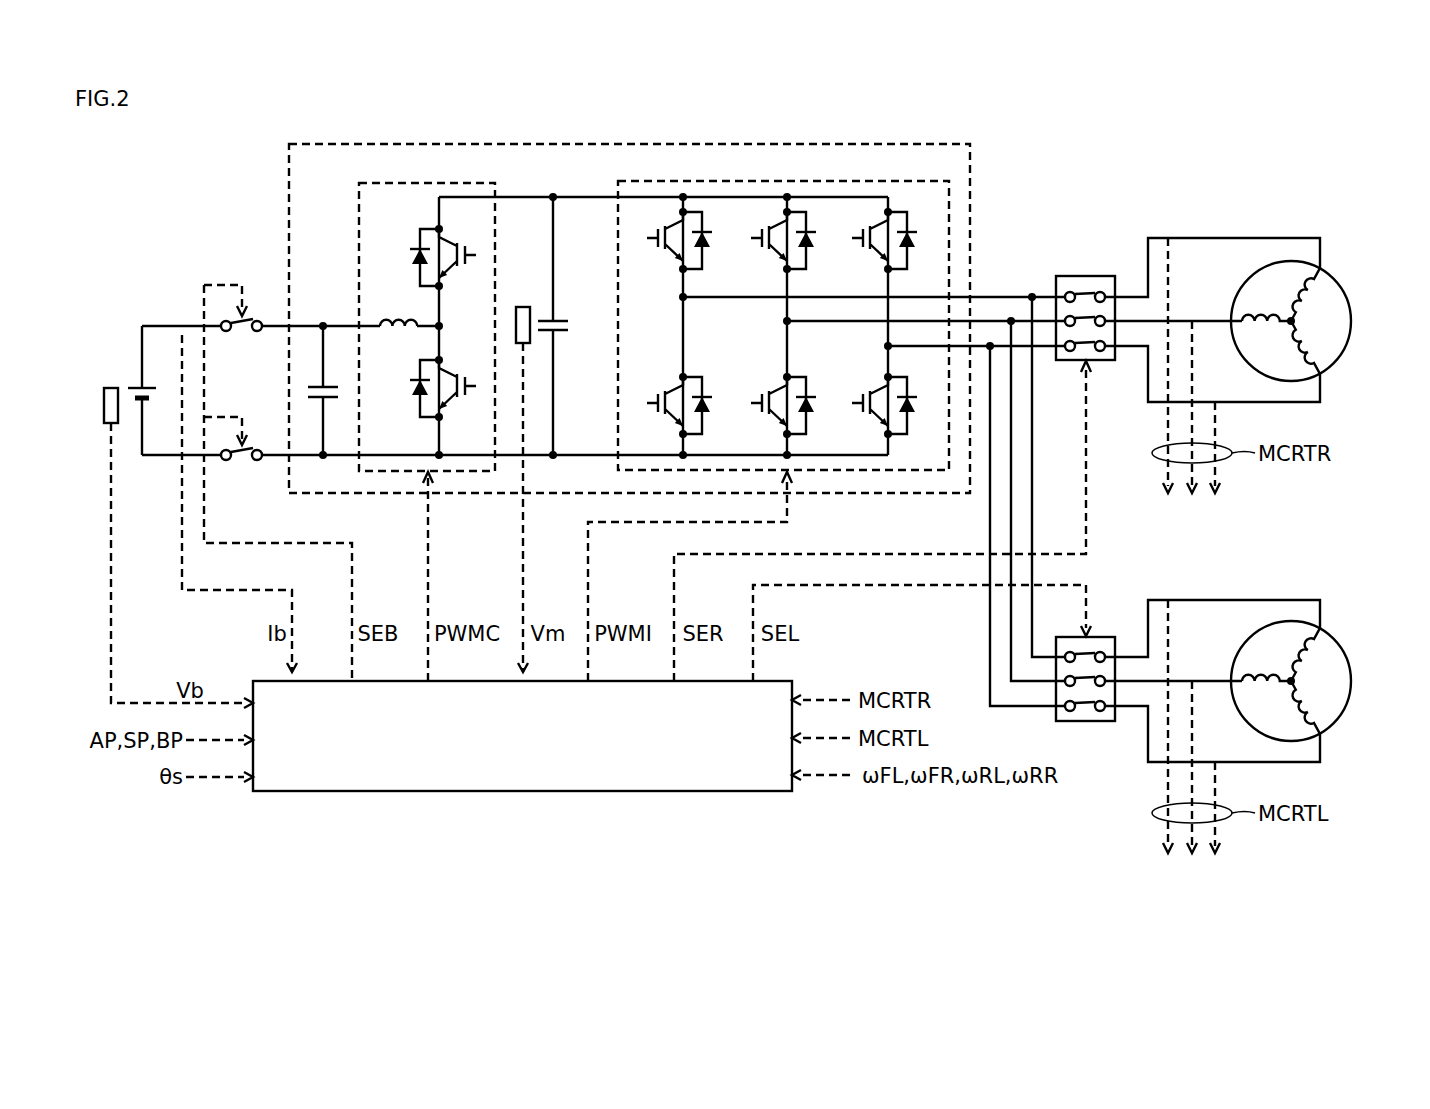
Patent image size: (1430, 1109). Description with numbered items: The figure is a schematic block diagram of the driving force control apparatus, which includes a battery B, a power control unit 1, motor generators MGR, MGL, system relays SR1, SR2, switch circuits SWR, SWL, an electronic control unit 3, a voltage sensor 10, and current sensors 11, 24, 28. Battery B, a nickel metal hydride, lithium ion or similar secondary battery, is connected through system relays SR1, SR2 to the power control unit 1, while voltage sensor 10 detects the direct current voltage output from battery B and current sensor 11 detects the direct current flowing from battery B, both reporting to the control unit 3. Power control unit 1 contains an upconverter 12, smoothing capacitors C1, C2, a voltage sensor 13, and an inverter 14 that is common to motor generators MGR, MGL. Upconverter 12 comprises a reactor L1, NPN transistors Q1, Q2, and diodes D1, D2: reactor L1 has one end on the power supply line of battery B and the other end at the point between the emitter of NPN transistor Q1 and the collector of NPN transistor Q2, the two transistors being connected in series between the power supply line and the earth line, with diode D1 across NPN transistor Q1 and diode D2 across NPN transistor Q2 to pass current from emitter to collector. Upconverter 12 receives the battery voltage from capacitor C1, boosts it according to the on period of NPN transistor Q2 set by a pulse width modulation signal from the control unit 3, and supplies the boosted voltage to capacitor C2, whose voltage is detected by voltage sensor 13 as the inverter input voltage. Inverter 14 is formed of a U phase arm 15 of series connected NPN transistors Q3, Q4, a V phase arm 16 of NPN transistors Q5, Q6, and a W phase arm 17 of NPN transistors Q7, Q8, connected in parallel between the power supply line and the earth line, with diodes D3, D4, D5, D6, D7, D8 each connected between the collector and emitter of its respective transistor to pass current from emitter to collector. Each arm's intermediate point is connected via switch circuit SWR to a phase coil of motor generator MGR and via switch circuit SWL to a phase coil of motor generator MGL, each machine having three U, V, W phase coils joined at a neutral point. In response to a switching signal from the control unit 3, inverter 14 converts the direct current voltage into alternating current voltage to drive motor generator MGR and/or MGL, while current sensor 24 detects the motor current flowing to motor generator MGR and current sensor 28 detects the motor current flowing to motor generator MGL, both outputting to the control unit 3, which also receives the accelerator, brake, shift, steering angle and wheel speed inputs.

The power control unit 1 is at (970, 158).
The ECU 3 is at (760, 791).
The voltage sensor 10 is at (111, 388).
The current sensor 11 is at (185, 344).
The upconverter 12 is at (432, 183).
The voltage sensor 13 is at (523, 307).
The inverter 14 is at (793, 180).
The U phase arm 15 is at (648, 310).
The V phase arm 16 is at (755, 337).
The W phase arm 17 is at (856, 360).
The current sensor 24 is at (1170, 222).
The current sensor 28 is at (1170, 584).
The battery B is at (150, 383).
The system relay SR1 is at (256, 316).
The system relay SR2 is at (256, 446).
The smoothing capacitor C1 is at (331, 399).
The smoothing capacitor C2 is at (572, 318).
The reactor L1 is at (398, 309).
The NPN transistor Q1 is at (446, 256).
The NPN transistor Q2 is at (446, 386).
The NPN transistor Q3 is at (667, 240).
The NPN transistor Q4 is at (667, 405).
The NPN transistor Q5 is at (771, 240).
The NPN transistor Q6 is at (771, 405).
The NPN transistor Q7 is at (872, 240).
The NPN transistor Q8 is at (872, 405).
The diode D1 is at (397, 264).
The diode D2 is at (397, 394).
The diode D3 is at (721, 266).
The diode D4 is at (721, 431).
The diode D5 is at (825, 266).
The diode D6 is at (825, 431).
The diode D7 is at (926, 266).
The diode D8 is at (926, 431).
The switch circuit SWR is at (1085, 276).
The switch circuit SWL is at (1085, 721).
The motor generator MGR is at (1345, 286).
The motor generator MGL is at (1345, 646).